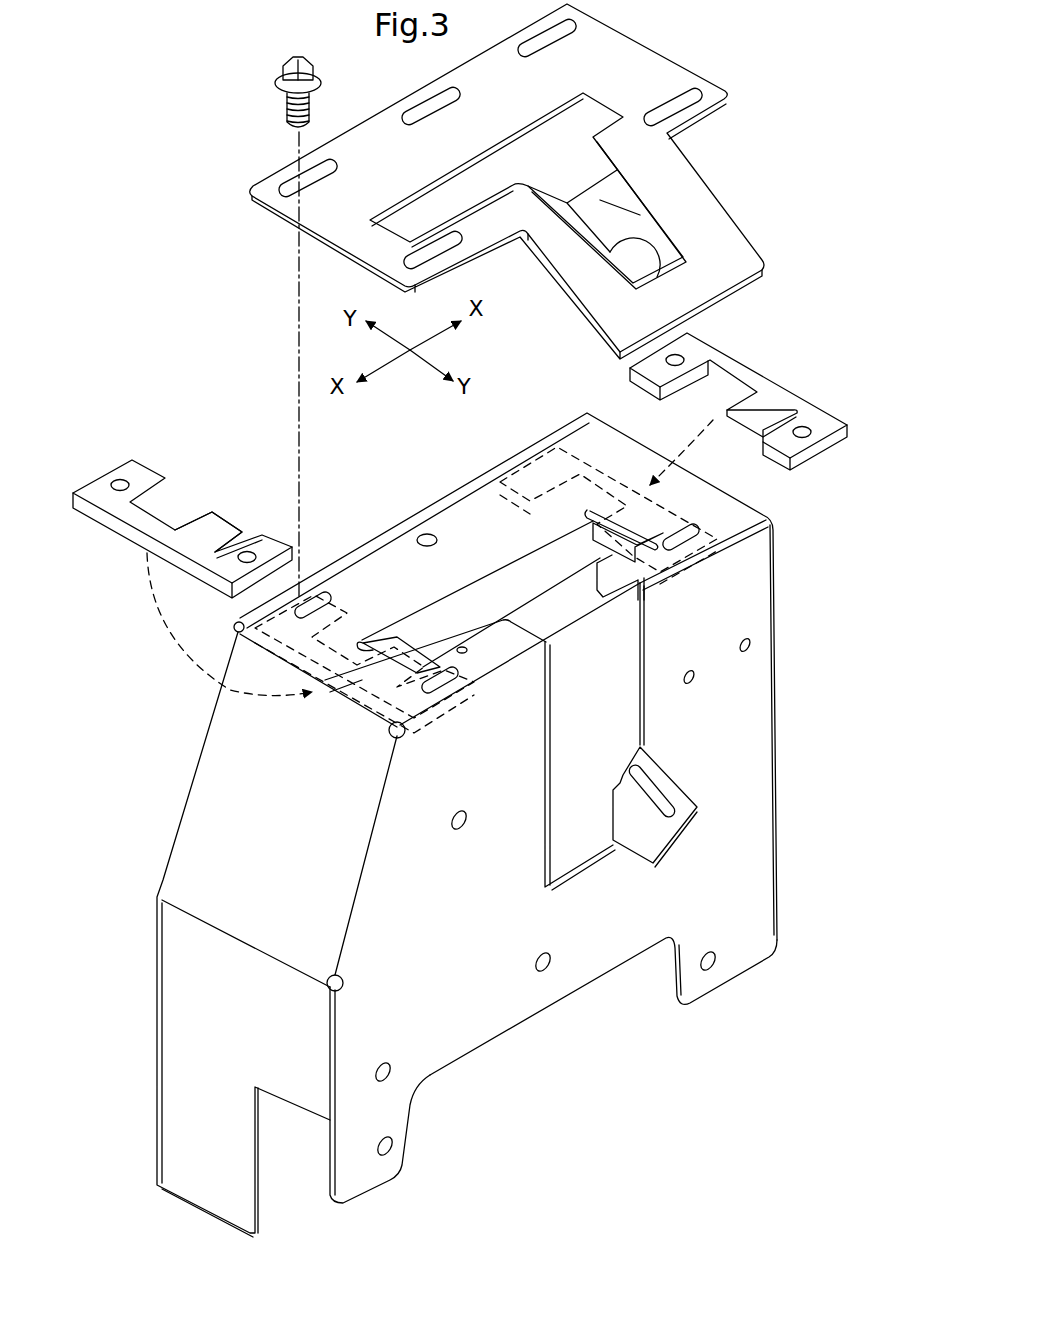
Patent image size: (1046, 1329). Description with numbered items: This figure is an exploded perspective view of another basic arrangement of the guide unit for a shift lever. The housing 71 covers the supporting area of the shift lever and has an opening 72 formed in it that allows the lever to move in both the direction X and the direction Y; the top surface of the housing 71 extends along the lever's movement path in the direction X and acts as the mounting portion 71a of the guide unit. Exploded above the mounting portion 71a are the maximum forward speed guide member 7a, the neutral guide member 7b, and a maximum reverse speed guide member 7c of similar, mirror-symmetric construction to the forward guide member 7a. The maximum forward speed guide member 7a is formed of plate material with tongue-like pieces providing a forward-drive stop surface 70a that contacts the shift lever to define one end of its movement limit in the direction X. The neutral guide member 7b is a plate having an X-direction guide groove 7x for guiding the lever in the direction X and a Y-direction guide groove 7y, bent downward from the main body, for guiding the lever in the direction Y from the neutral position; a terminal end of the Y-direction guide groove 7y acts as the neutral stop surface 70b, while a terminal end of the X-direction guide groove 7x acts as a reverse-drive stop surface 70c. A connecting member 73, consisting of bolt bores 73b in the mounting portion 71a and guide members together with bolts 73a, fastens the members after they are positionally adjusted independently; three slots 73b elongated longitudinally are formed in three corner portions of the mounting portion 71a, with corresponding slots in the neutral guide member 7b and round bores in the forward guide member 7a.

The maximum forward speed guide member 7a is at (108, 466).
The neutral guide member 7b is at (479, 181).
The maximum reverse speed guide member 7c is at (778, 370).
The X-direction guide groove 7x is at (518, 160).
The Y-direction guide groove 7y is at (640, 215).
The forward-drive stop surface 70a is at (229, 522).
The neutral stop surface 70b is at (617, 254).
The reverse-drive stop surface 70c is at (766, 432).
The housing 71 is at (439, 825).
The mounting portion 71a is at (470, 518).
The opening 72 is at (608, 710).
The connecting member 73 is at (233, 325).
The bolt 73a is at (276, 70).
The bolt bore 73b is at (432, 250).